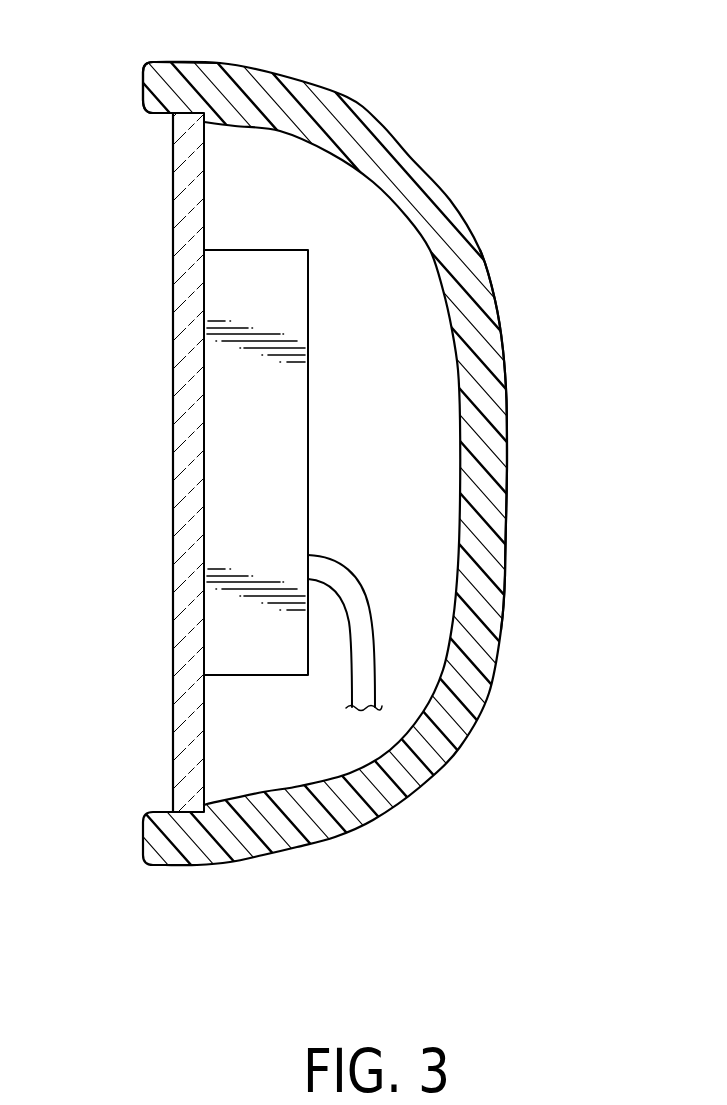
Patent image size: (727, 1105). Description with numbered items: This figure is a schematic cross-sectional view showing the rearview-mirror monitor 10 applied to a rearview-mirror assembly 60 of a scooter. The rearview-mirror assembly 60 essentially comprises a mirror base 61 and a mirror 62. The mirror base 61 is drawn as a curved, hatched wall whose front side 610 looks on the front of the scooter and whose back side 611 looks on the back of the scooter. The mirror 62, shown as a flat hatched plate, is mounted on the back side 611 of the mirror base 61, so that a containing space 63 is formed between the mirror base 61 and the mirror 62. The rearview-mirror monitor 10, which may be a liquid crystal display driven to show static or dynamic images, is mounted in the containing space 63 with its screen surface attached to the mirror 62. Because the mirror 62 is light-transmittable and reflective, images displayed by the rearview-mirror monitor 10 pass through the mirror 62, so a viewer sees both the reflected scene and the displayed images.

The rearview-mirror monitor 10 is at (270, 473).
The rearview-mirror assembly 60 is at (332, 552).
The mirror base 61 is at (445, 233).
The front side 610 is at (505, 415).
The back side 611 is at (142, 83).
The mirror 62 is at (187, 233).
The containing space 63 is at (397, 361).